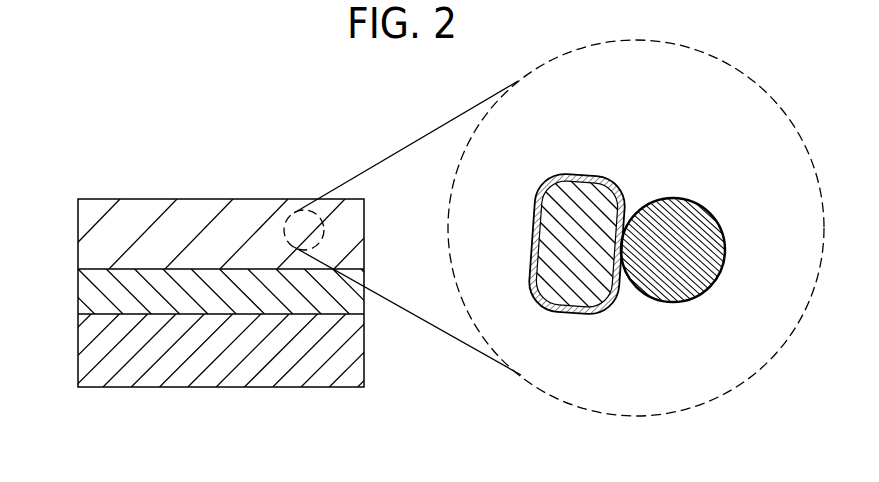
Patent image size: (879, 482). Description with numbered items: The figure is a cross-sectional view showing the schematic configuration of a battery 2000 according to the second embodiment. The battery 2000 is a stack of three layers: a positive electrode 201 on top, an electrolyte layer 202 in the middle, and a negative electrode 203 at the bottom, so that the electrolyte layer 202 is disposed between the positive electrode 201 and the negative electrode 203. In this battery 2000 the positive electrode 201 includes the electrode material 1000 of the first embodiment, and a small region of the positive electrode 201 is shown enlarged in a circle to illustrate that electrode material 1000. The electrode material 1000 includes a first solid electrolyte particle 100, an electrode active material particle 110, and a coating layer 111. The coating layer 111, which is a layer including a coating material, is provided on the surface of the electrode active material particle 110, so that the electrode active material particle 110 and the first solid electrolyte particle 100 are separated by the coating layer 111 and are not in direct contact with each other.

The battery 2000 is at (224, 259).
The positive electrode 201 is at (78, 234).
The electrolyte layer 202 is at (78, 292).
The negative electrode 203 is at (78, 350).
The electrode material 1000 is at (663, 129).
The electrode active material particle 110 is at (599, 254).
The coating layer 111 is at (567, 310).
The first solid electrolyte particle 100 is at (697, 221).